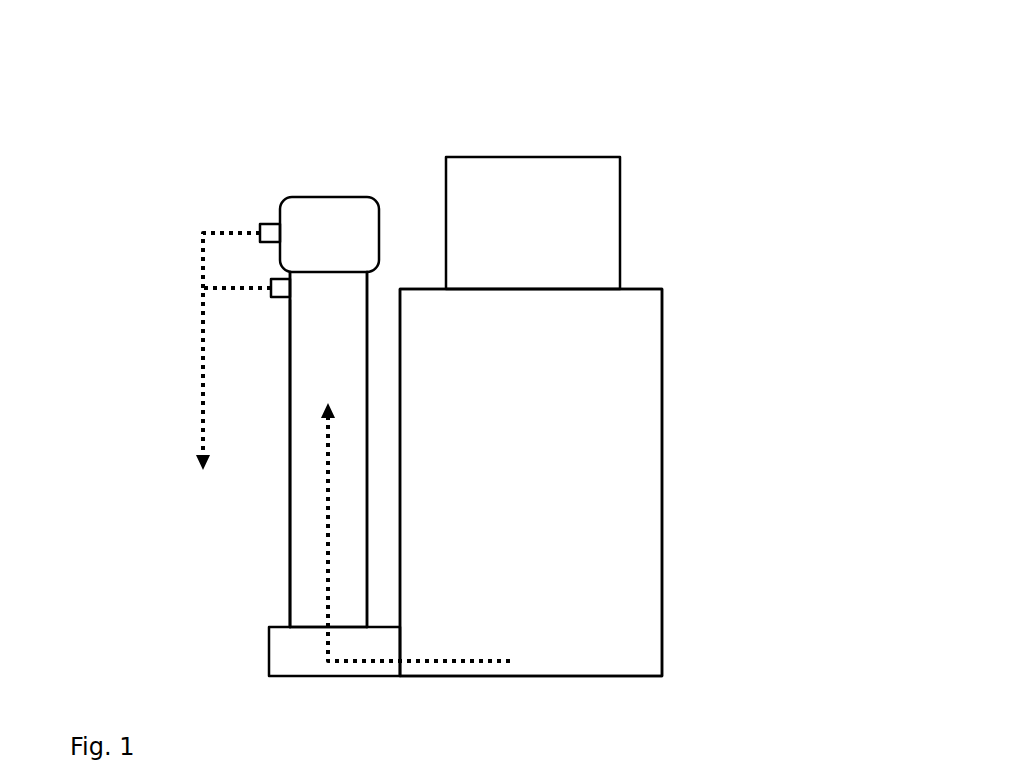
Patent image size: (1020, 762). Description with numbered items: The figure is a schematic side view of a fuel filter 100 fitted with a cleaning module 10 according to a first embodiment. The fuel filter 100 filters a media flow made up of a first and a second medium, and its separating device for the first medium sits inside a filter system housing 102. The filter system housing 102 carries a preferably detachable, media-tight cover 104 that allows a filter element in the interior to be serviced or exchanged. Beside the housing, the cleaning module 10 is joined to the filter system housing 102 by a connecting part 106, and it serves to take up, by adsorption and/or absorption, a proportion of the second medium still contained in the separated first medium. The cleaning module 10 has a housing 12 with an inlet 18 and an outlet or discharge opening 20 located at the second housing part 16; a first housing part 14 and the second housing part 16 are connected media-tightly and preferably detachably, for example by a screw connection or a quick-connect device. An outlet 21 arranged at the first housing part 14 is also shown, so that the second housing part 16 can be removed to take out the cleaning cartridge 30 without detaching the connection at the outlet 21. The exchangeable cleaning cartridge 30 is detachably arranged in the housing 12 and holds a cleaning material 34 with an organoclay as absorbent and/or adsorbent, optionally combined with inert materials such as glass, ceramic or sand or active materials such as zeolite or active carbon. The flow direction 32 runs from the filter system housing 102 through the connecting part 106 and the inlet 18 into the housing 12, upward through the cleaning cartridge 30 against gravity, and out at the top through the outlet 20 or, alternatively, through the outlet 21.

The fuel filter 100 is at (623, 120).
The filter system housing 102 is at (662, 381).
The media-tight cover 104 is at (620, 178).
The connecting part 106 is at (269, 661).
The cleaning module 10 is at (310, 193).
The housing 12 is at (281, 366).
The first housing part 14 is at (291, 571).
The second housing part 16 is at (343, 197).
The inlet 18 is at (291, 625).
The outlet or discharge opening 20 is at (260, 222).
The outlet 21 is at (271, 283).
The cleaning cartridge 30 is at (290, 333).
The flow direction 32 is at (203, 396).
The cleaning material 34 is at (326, 373).